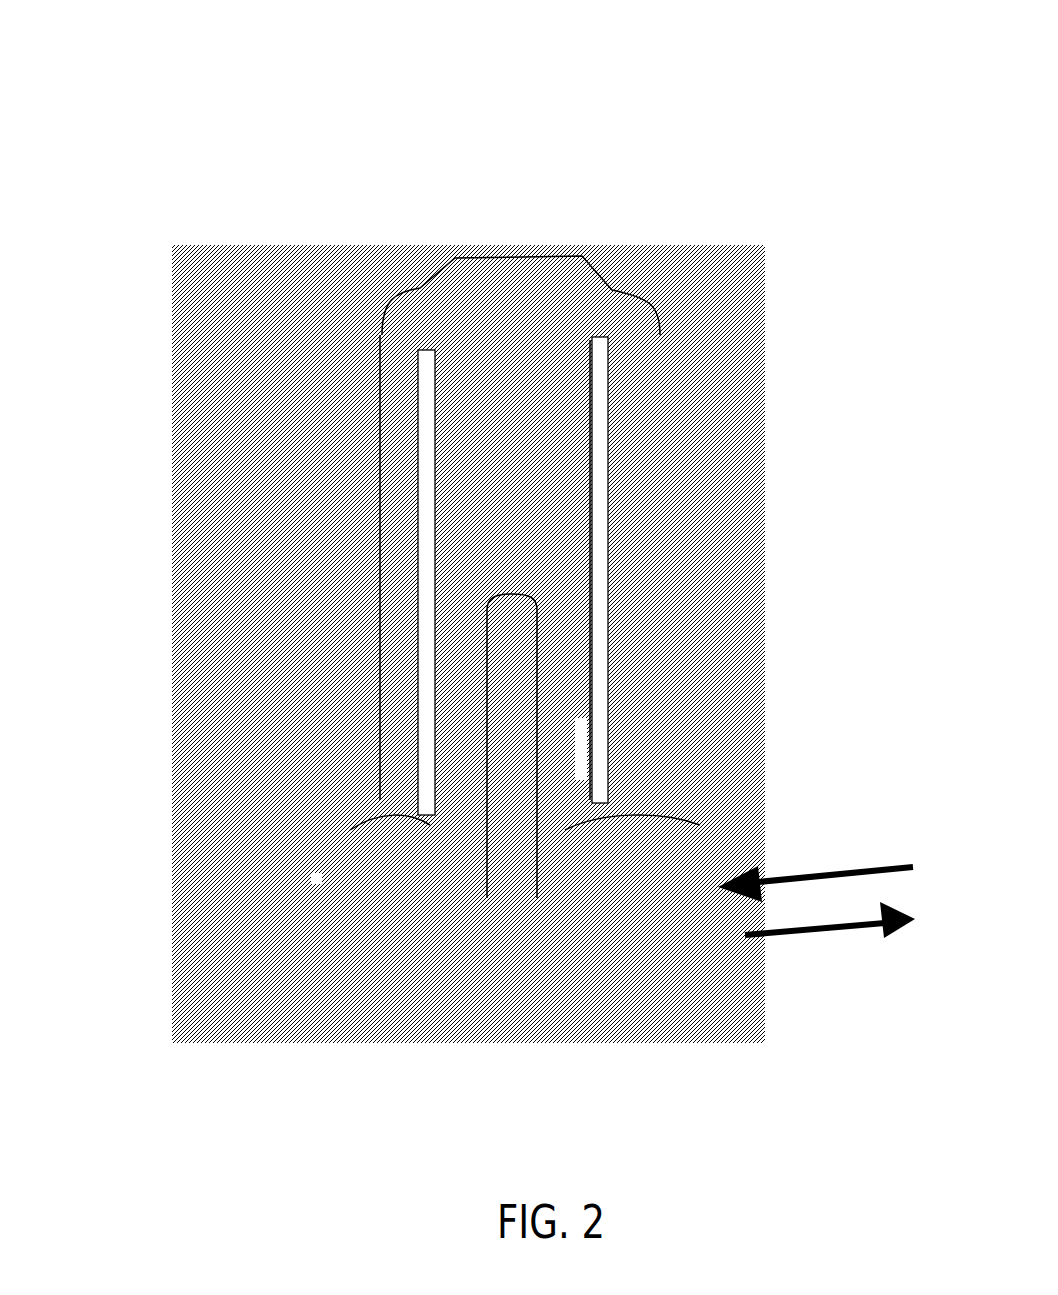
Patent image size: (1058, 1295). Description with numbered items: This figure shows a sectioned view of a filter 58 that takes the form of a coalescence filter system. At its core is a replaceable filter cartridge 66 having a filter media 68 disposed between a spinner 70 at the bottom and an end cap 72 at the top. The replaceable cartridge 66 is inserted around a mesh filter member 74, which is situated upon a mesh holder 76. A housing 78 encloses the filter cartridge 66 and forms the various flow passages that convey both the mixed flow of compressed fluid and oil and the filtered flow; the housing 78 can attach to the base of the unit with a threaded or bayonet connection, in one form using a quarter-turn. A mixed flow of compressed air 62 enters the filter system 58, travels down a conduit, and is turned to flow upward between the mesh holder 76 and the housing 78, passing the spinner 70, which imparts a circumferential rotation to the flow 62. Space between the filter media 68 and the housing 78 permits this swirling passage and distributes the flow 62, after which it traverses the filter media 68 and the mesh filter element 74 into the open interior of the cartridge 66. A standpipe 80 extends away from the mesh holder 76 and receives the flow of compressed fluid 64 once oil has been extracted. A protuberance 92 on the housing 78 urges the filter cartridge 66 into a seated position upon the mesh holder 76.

The filter 58 is at (306, 160).
The mixed flow of compressed air 62 is at (835, 870).
The flow of compressed fluid 64 is at (822, 932).
The replaceable filter cartridge 66 is at (187, 285).
The filter media 68 is at (420, 503).
The spinner 70 is at (385, 805).
The end cap 72 is at (410, 352).
The mesh filter member 74 is at (585, 558).
The mesh holder 76 is at (598, 838).
The housing 78 is at (640, 305).
The standpipe 80 is at (545, 655).
The protuberance 92 is at (594, 344).